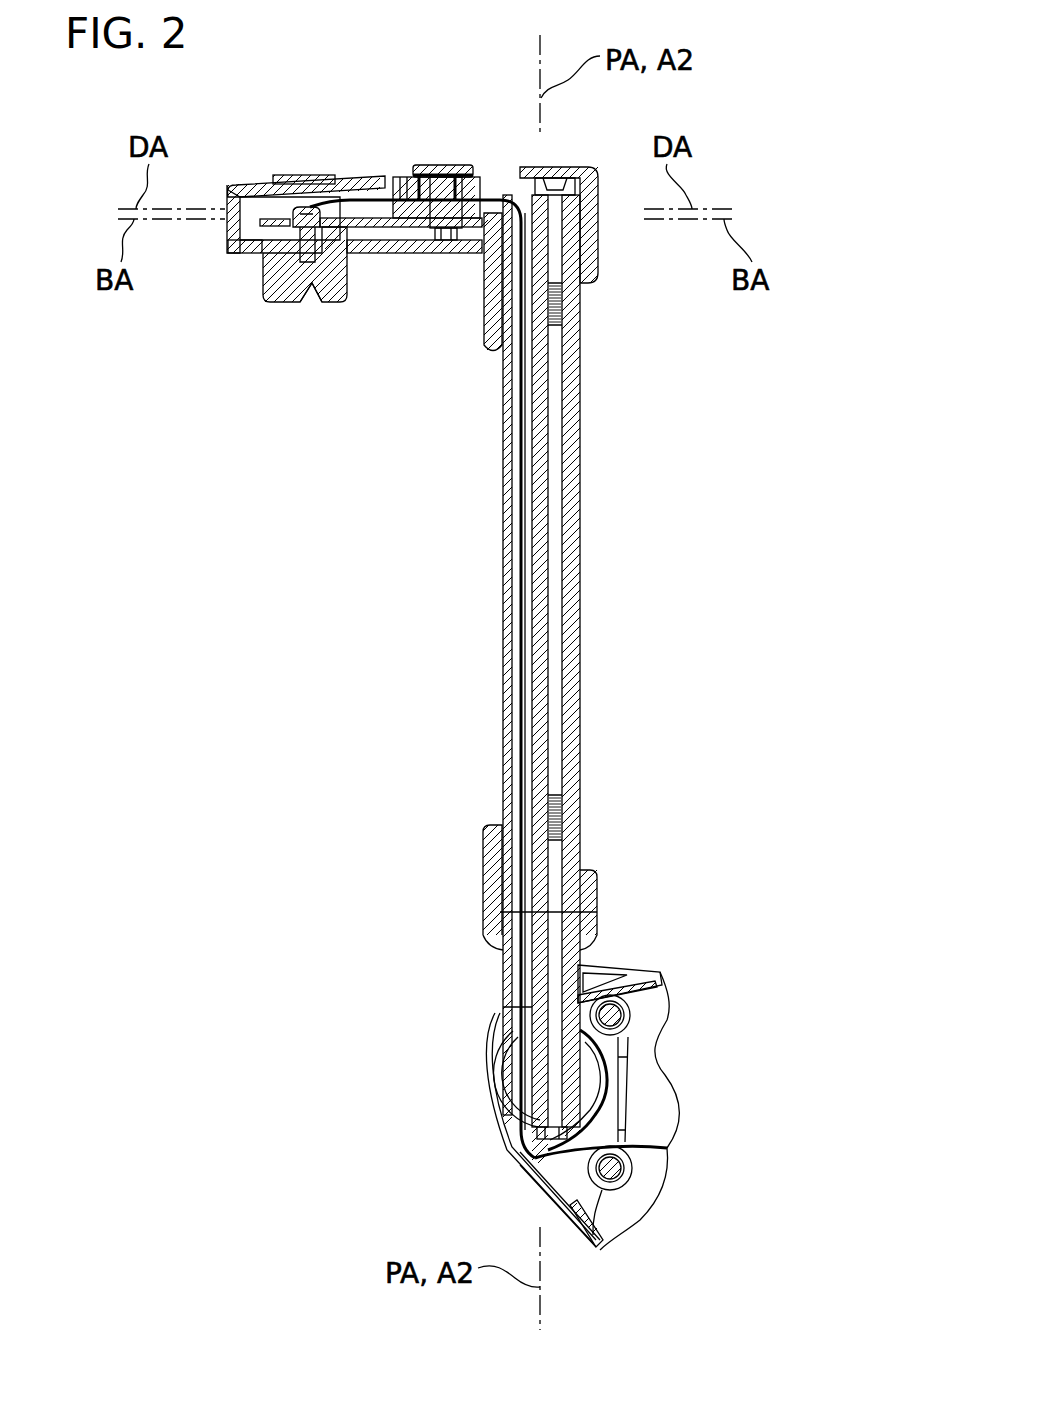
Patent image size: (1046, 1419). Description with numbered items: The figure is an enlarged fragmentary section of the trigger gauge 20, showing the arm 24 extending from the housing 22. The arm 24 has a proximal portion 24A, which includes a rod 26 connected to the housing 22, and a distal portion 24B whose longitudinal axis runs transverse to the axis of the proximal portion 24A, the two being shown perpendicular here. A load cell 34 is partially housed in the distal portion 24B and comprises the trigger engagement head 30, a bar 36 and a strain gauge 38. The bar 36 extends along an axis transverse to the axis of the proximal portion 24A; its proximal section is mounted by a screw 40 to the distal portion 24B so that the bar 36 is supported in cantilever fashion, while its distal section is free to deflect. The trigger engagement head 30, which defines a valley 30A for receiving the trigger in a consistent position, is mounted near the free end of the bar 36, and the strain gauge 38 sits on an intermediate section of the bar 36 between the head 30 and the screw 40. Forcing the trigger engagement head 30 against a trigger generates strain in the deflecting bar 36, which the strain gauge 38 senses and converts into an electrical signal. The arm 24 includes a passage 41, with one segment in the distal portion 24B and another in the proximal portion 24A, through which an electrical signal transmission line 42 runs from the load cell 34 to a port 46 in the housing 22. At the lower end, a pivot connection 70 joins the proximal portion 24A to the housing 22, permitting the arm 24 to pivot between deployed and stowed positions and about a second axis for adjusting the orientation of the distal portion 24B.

The trigger gauge 20 is at (780, 445).
The housing 22 is at (665, 905).
The arm 24 is at (662, 413).
The proximal portion 24A is at (598, 653).
The distal portion 24B is at (503, 150).
The rod 26 is at (580, 576).
The trigger engagement head 30 is at (350, 301).
The valley 30A is at (298, 302).
The load cell 34 is at (343, 190).
The bar 36 is at (376, 228).
The strain gauge 38 is at (358, 186).
The screw 40 is at (472, 176).
The passage 41 is at (520, 528).
The electrical signal transmission line 42 is at (517, 452).
The port 46 is at (622, 1080).
The pivot connection 70 is at (402, 1135).